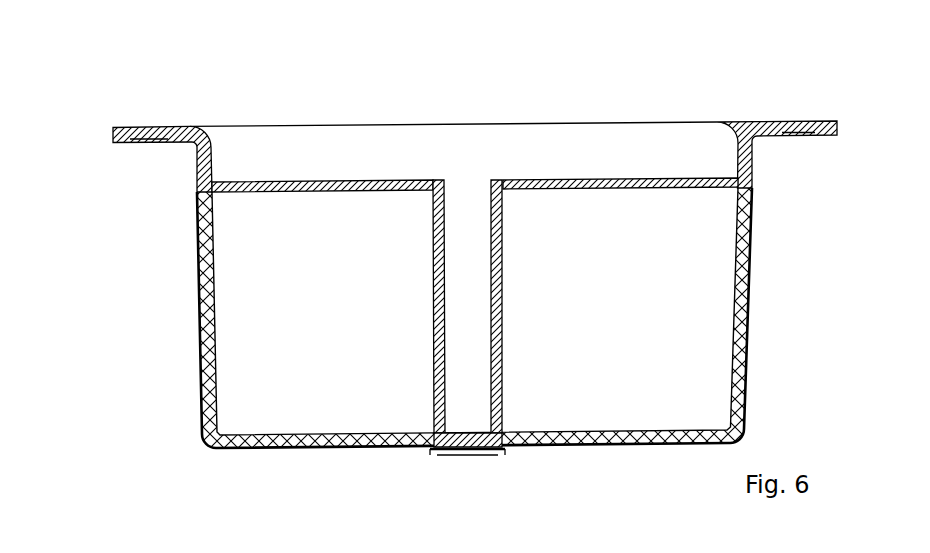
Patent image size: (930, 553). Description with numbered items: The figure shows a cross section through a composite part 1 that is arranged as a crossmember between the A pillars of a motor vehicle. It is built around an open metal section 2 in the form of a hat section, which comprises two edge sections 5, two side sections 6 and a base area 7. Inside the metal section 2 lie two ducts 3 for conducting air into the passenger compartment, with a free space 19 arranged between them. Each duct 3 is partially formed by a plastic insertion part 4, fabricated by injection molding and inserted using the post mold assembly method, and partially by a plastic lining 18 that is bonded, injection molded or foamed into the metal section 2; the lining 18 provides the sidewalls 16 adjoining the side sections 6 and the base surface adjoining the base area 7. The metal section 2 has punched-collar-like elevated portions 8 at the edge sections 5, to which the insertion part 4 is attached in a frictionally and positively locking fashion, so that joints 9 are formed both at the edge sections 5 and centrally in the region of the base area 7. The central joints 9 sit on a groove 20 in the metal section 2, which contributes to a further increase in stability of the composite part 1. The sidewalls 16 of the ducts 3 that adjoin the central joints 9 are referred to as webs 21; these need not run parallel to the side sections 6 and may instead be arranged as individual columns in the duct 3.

The composite part 1 is at (623, 52).
The metal section 2 is at (464, 342).
The duct 3 is at (165, 306).
The insertion part 4 is at (338, 180).
The edge section 5 is at (467, 127).
The side section 6 is at (198, 262).
The base area 7 is at (641, 446).
The elevated portion 8 is at (150, 127).
The joint 9 is at (147, 122).
The sidewall 16 is at (732, 346).
The lining 18 is at (205, 383).
The free space 19 is at (470, 195).
The groove 20 is at (495, 456).
The web 21 is at (433, 241).